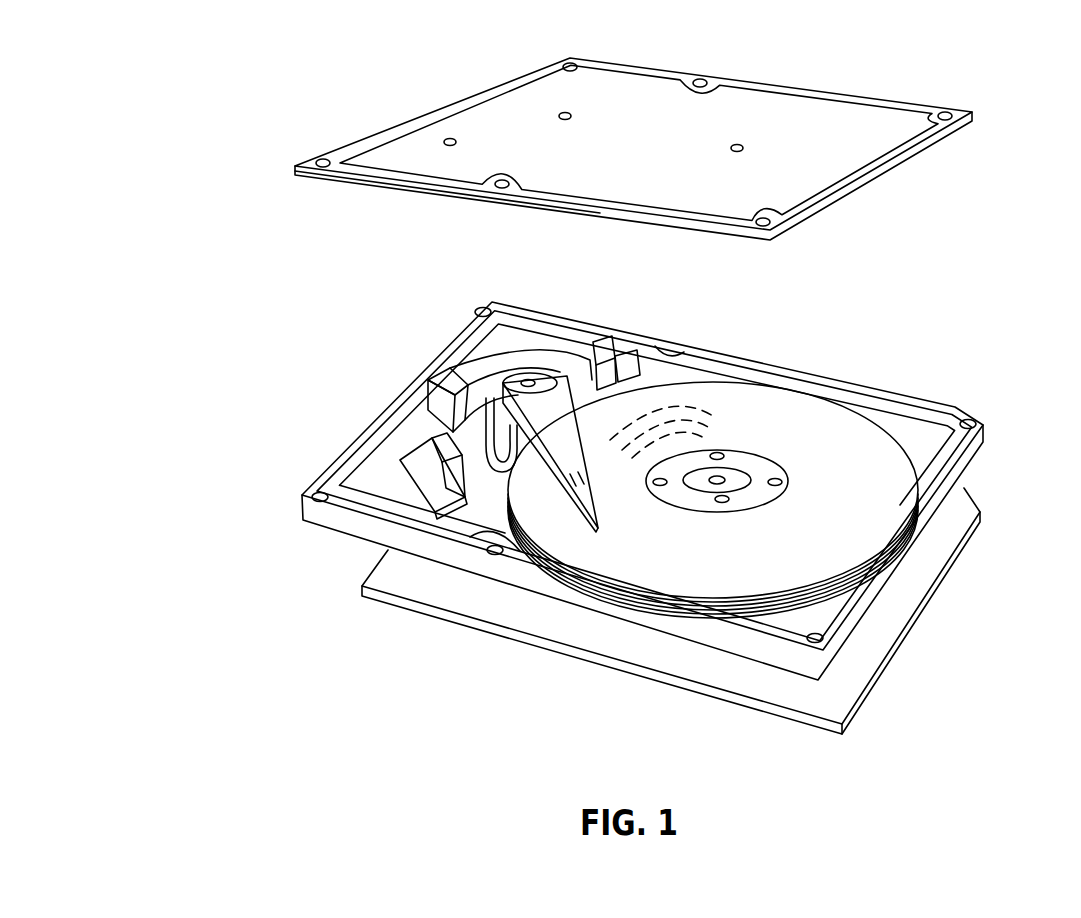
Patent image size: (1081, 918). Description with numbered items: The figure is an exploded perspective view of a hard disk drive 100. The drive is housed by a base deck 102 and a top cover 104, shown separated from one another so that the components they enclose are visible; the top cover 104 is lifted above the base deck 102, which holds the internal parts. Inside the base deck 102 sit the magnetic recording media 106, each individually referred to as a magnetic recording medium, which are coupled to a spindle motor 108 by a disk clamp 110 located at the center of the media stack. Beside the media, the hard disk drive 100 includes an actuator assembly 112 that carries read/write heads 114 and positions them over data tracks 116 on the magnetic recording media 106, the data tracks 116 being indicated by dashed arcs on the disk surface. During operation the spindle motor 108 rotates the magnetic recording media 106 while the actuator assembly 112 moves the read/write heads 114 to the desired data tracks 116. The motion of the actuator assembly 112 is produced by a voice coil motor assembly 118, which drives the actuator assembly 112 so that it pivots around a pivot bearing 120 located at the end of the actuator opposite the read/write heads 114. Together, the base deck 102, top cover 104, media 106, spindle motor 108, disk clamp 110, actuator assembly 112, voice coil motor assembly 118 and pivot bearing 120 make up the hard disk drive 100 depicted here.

The hard disk drive 100 is at (210, 107).
The base deck 102 is at (962, 458).
The top cover 104 is at (818, 141).
The magnetic recording media 106 is at (872, 502).
The spindle motor 108 is at (730, 478).
The disk clamp 110 is at (760, 494).
The actuator assembly 112 is at (466, 337).
The read/write heads 114 is at (596, 530).
The data tracks 116 is at (668, 412).
The voice coil motor assembly 118 is at (498, 345).
The pivot bearing 120 is at (542, 380).